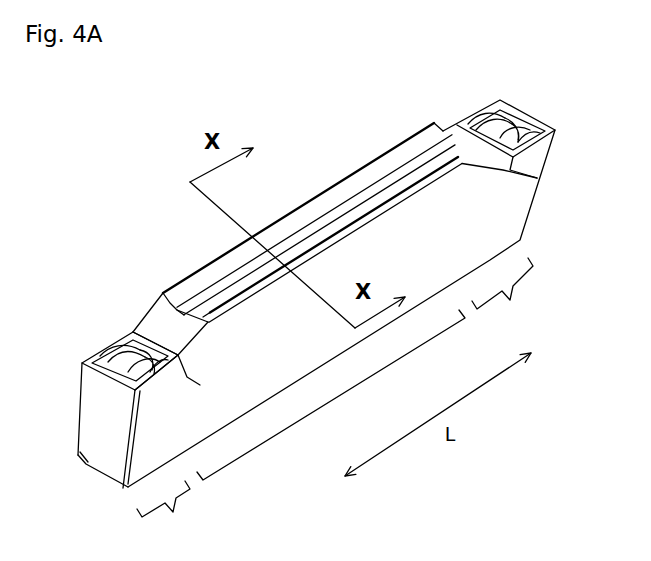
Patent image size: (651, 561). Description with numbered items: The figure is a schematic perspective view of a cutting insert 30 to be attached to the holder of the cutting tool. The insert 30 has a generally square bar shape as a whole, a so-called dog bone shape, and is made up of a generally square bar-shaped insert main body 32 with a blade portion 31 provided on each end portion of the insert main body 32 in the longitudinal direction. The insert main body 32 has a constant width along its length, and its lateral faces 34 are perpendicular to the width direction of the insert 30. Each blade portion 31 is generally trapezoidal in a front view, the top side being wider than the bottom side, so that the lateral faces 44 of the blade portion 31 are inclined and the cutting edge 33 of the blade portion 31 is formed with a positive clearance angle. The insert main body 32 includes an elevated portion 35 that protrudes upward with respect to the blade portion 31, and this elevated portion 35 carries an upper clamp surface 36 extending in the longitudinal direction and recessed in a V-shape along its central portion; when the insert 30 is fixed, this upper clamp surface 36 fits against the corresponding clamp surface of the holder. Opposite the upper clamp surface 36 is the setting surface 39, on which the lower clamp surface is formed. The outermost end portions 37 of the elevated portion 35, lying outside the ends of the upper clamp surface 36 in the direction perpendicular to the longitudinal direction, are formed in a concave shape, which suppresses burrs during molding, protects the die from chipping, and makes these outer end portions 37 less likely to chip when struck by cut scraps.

The insert 30 is at (386, 112).
The blade portion 31 is at (543, 78).
The insert main body 32 is at (341, 397).
The cutting edge 33 is at (92, 350).
The lateral faces 34 is at (481, 208).
The elevated portion 35 is at (163, 312).
The upper clamp surface 36 is at (327, 203).
The outer end portions 37 is at (288, 216).
The setting surface 39 is at (86, 460).
The lateral faces of the blade portion 44 is at (153, 394).